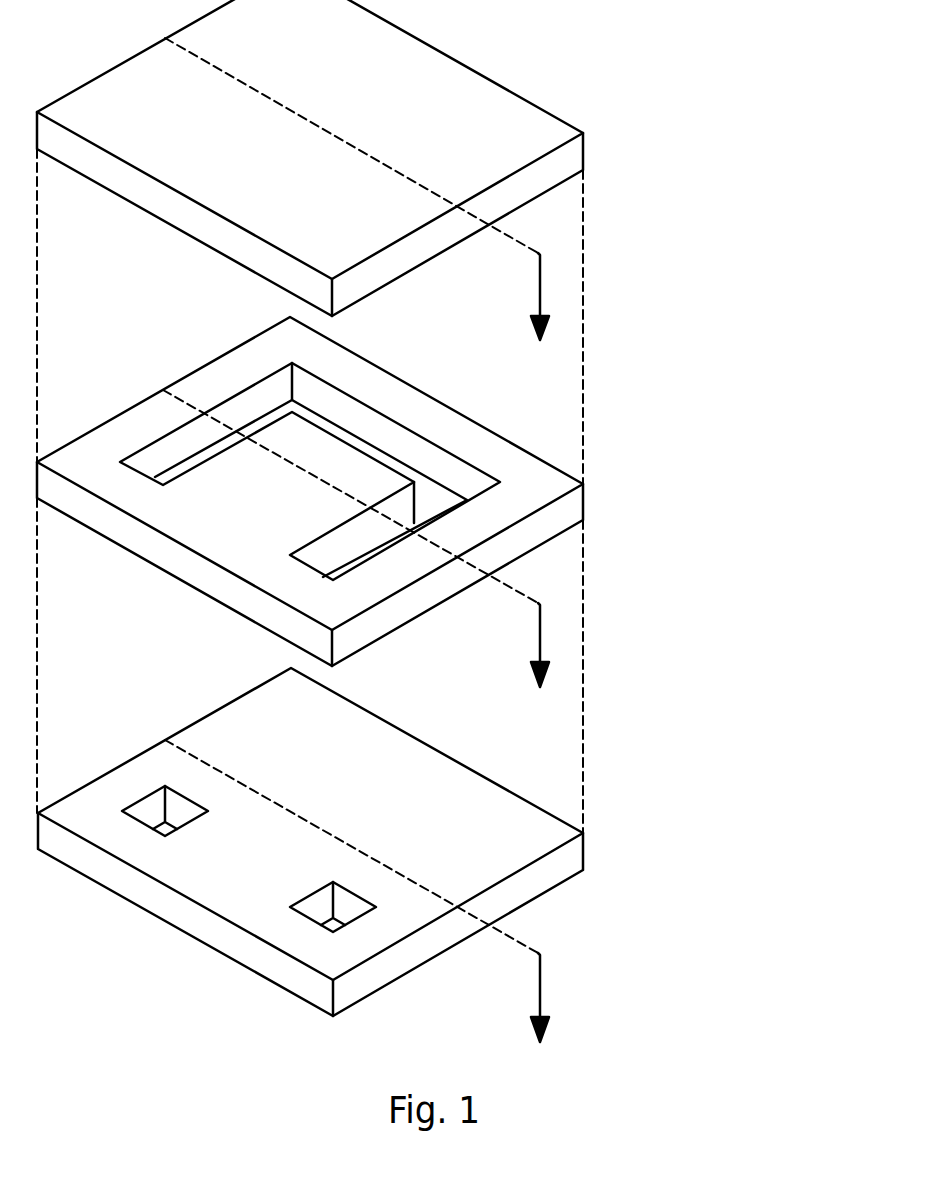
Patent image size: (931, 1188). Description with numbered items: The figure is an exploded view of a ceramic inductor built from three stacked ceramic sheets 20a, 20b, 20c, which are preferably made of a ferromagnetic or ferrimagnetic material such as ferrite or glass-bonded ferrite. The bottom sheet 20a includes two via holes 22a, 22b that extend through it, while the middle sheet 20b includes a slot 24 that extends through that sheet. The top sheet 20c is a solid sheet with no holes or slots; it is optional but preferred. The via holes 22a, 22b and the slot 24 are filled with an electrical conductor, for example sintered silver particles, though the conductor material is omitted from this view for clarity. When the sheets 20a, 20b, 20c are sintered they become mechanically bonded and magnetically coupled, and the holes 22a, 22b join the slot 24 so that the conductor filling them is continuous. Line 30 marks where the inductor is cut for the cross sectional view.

The bottom sheet 20a is at (147, 897).
The middle sheet 20b is at (147, 542).
The top sheet 20c is at (147, 188).
The via hole 22a is at (157, 807).
The via hole 22b is at (325, 902).
The slot 24 is at (275, 413).
The line 30 is at (265, 795).